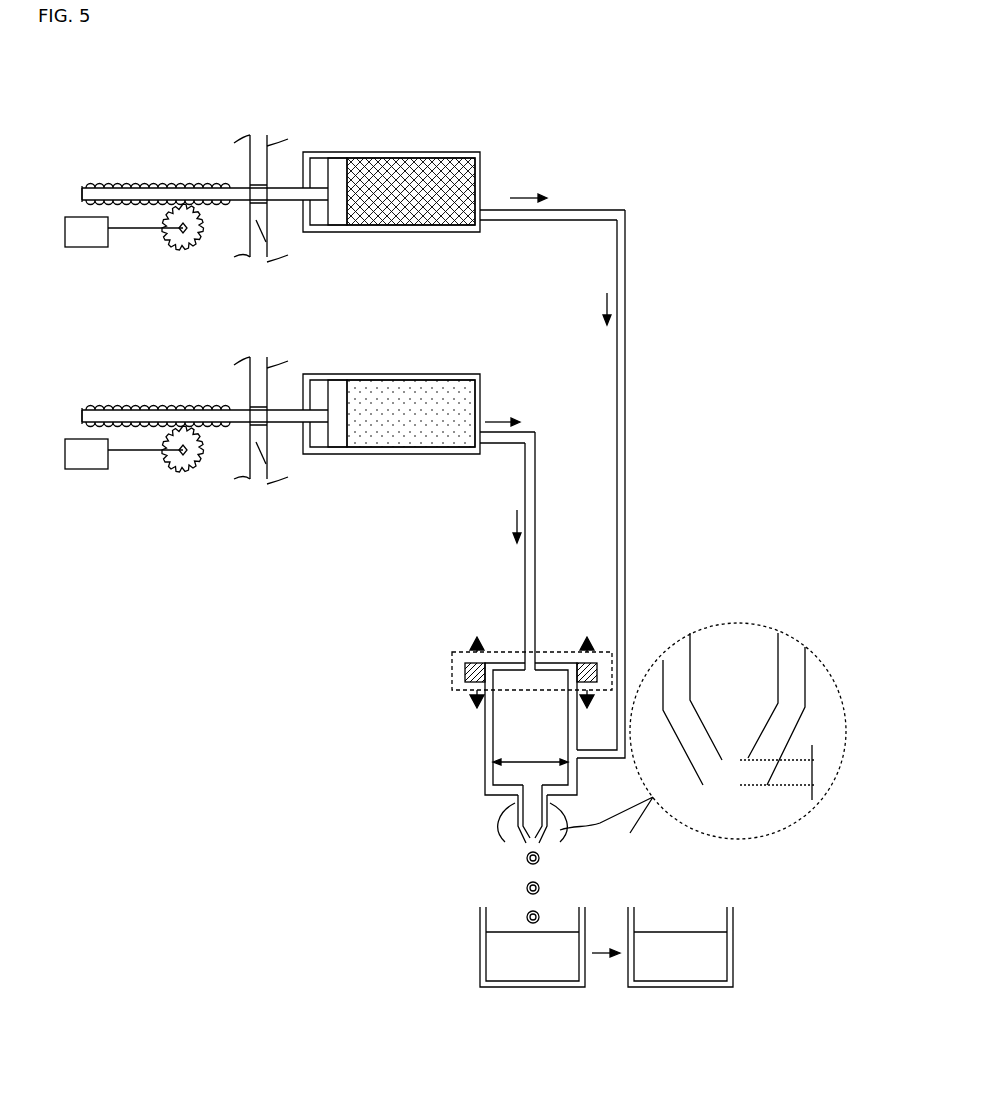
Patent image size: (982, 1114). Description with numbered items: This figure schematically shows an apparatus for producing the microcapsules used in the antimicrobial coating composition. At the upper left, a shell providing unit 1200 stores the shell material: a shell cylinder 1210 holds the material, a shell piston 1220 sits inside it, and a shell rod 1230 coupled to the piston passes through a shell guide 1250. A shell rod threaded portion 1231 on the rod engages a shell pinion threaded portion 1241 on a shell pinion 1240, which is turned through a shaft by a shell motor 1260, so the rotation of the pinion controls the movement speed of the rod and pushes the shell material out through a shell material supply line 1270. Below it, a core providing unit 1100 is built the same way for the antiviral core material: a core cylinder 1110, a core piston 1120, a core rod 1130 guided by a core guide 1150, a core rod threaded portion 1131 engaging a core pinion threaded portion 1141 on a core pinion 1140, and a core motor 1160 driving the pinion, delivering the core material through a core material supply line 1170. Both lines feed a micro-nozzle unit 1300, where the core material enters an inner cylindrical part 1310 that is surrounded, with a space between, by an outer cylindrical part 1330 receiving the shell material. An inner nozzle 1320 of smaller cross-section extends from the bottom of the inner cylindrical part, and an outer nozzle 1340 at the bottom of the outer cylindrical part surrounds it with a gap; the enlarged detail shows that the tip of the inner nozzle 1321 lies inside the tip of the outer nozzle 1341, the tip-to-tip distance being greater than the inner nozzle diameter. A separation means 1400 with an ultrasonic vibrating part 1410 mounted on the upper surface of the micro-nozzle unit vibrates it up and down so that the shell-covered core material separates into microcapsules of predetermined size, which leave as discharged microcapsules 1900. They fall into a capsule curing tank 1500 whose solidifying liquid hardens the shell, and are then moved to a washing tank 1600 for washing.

The core providing unit 1100 is at (488, 338).
The core cylinder 1110 is at (380, 374).
The core piston 1120 is at (338, 380).
The core rod 1130 is at (88, 410).
The core rod threaded portion 1131 is at (157, 408).
The core pinion 1140 is at (172, 474).
The core pinion threaded portion 1141 is at (195, 472).
The core guide 1150 is at (265, 486).
The core motor 1160 is at (85, 471).
The core material supply line 1170 is at (537, 592).
The shell providing unit 1200 is at (487, 118).
The shell cylinder 1210 is at (380, 152).
The shell piston 1220 is at (338, 158).
The shell rod 1230 is at (88, 188).
The shell rod threaded portion 1231 is at (157, 186).
The shell pinion 1240 is at (172, 252).
The shell pinion threaded portion 1241 is at (195, 250).
The shell guide 1250 is at (262, 264).
The shell motor 1260 is at (85, 249).
The shell material supply line 1270 is at (630, 483).
The micro-nozzle unit 1300 is at (438, 626).
The inner cylindrical part 1310 is at (523, 727).
The inner nozzle 1320 is at (520, 800).
The tip of the inner nozzle 1321 is at (748, 760).
The outer cylindrical part 1330 is at (485, 770).
The outer nozzle 1340 is at (500, 832).
The tip of the outer nozzle 1341 is at (767, 785).
The separation means 1400 is at (445, 693).
The ultrasonic vibrating part 1410 is at (462, 672).
The capsule curing tank 1500 is at (478, 958).
The washing tank 1600 is at (655, 990).
The microcapsules 1900 is at (520, 888).